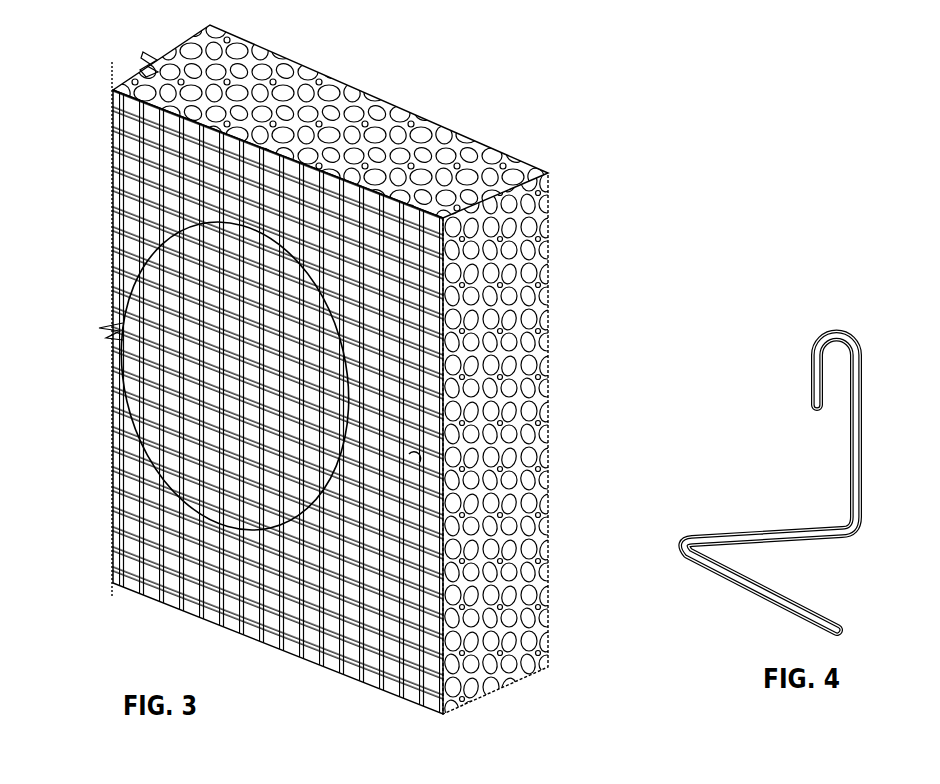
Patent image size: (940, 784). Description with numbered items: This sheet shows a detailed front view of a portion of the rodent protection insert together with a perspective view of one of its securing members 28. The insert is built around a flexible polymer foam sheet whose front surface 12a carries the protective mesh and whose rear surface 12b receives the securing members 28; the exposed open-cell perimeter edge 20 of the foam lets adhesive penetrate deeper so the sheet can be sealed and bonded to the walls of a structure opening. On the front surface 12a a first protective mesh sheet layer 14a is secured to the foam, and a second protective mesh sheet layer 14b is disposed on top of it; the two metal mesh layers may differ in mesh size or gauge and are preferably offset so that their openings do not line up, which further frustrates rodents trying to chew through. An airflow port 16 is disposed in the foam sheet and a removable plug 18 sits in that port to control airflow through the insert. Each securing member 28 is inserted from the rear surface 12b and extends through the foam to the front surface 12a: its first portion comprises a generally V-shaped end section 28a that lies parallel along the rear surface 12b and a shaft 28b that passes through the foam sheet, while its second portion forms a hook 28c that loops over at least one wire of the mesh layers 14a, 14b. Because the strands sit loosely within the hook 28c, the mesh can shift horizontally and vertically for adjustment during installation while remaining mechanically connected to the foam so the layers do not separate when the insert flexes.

In FIG. 3, the front surface 12a is at (330, 640).
In FIG. 3, the rear surface 12b is at (548, 620).
In FIG. 3, the first protective mesh sheet layer 14a is at (143, 100).
In FIG. 3, the second protective mesh sheet layer 14b is at (118, 170).
In FIG. 3, the airflow port 16 is at (123, 345).
In FIG. 3, the removable plug 18 is at (185, 414).
In FIG. 3, the perimeter edge 20 is at (525, 227).
In FIG. 4, the securing member 28 is at (870, 518).
In FIG. 3, the V-shaped end section 28a is at (548, 410).
In FIG. 4, the V-shaped end section 28a is at (718, 578).
In FIG. 3, the shaft 28b is at (462, 433).
In FIG. 4, the shaft 28b is at (853, 449).
In FIG. 3, the hook 28c is at (407, 470).
In FIG. 4, the hook 28c is at (833, 333).